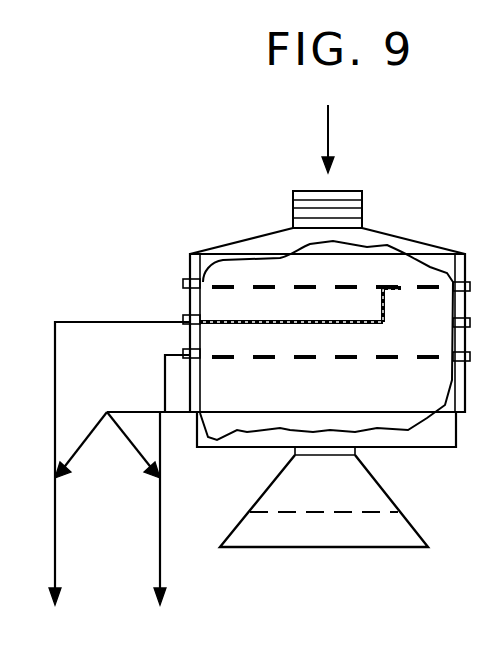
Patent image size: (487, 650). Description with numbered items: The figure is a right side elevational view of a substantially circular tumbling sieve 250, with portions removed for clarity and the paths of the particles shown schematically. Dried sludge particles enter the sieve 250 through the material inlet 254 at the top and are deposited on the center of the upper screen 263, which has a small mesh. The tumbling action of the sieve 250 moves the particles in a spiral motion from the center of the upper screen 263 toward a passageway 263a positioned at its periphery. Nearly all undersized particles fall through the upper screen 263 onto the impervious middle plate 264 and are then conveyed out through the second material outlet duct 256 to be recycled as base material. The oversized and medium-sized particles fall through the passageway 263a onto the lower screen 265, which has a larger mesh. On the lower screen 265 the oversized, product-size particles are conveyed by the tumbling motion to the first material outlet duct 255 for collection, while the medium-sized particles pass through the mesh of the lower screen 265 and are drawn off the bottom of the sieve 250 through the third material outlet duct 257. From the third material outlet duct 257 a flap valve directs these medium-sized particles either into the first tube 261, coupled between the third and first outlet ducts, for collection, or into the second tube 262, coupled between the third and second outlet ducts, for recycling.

The tumbling sieve 250 is at (180, 216).
The material inlet 254 is at (362, 190).
The first material outlet duct 255 is at (165, 522).
The second material outlet duct 256 is at (130, 320).
The third material outlet duct 257 is at (135, 411).
The first tube 261 is at (137, 448).
The second tube 262 is at (80, 449).
The upper screen 263 is at (305, 284).
The passageway 263a is at (413, 282).
The middle plate 264 is at (268, 325).
The lower screen 265 is at (346, 360).